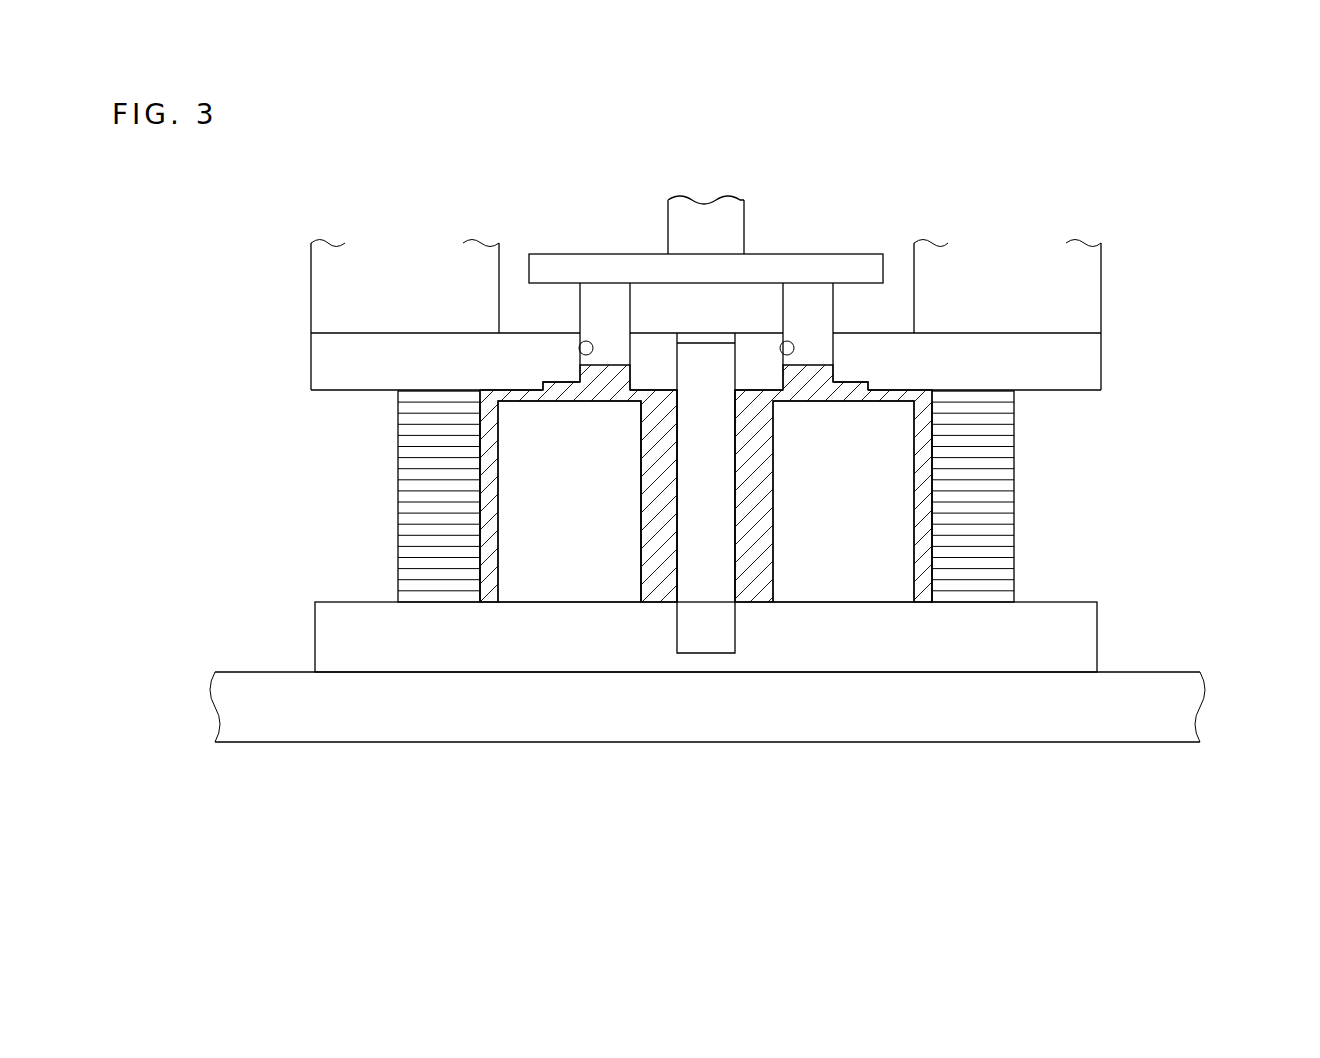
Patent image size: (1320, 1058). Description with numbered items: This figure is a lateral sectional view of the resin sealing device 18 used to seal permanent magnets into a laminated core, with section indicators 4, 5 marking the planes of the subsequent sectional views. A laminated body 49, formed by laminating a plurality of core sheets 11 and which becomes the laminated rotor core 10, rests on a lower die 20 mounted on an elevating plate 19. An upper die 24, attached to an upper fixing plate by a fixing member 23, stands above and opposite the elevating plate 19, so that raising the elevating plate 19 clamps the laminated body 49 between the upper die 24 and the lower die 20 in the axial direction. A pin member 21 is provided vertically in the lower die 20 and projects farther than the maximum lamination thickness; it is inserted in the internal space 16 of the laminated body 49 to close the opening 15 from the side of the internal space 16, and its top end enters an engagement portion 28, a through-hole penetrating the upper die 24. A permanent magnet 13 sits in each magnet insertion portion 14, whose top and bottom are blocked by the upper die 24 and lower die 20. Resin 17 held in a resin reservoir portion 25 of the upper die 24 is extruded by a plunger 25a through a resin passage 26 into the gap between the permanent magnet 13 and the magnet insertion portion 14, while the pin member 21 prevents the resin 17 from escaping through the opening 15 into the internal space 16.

The section line 4- 4 is at (148, 560).
The section line 5- 5 is at (148, 440).
The laminated rotor core 10 is at (1040, 482).
The core sheets 11 is at (1013, 600).
The permanent magnet 13 is at (860, 577).
The magnet insertion portion 14 is at (930, 567).
The opening 15 is at (727, 567).
The internal space 16 is at (707, 510).
The resin 17 is at (760, 580).
The resin sealing device 18 is at (1047, 207).
The elevating plate 19 is at (1100, 718).
The lower die 20 is at (1075, 637).
The pin member 21 is at (708, 635).
The fixing member 23 is at (1085, 281).
The upper die 24 is at (1085, 353).
The resin reservoir portion 25 is at (782, 358).
The plunger 25a is at (807, 307).
The resin passage 26 is at (847, 387).
The engagement portion 28 is at (678, 372).
The laminated body 49 is at (378, 475).